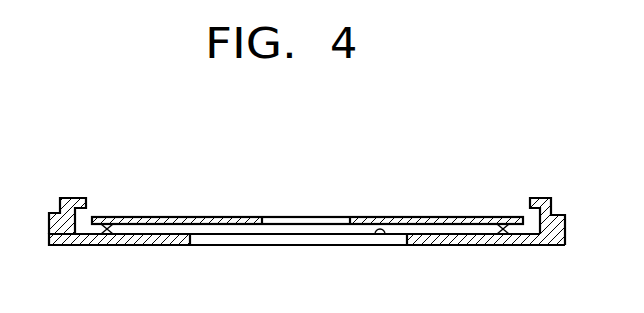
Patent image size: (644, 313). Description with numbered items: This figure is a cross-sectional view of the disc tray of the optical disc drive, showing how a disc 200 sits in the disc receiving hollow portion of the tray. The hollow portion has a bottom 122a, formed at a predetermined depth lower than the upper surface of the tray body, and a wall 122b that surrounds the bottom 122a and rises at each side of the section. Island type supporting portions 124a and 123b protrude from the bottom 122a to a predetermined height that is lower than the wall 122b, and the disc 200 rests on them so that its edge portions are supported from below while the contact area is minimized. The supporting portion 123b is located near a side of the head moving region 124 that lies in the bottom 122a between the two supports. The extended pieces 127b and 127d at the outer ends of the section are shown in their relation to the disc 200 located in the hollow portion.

The disc 200 is at (372, 216).
The head moving region 124 is at (283, 242).
The supporting portion 124a is at (107, 225).
The supporting portion 123b is at (504, 226).
The bottom 122a is at (391, 236).
The wall 122b is at (78, 236).
The extended piece 127b is at (83, 198).
The extended piece 127d is at (535, 198).